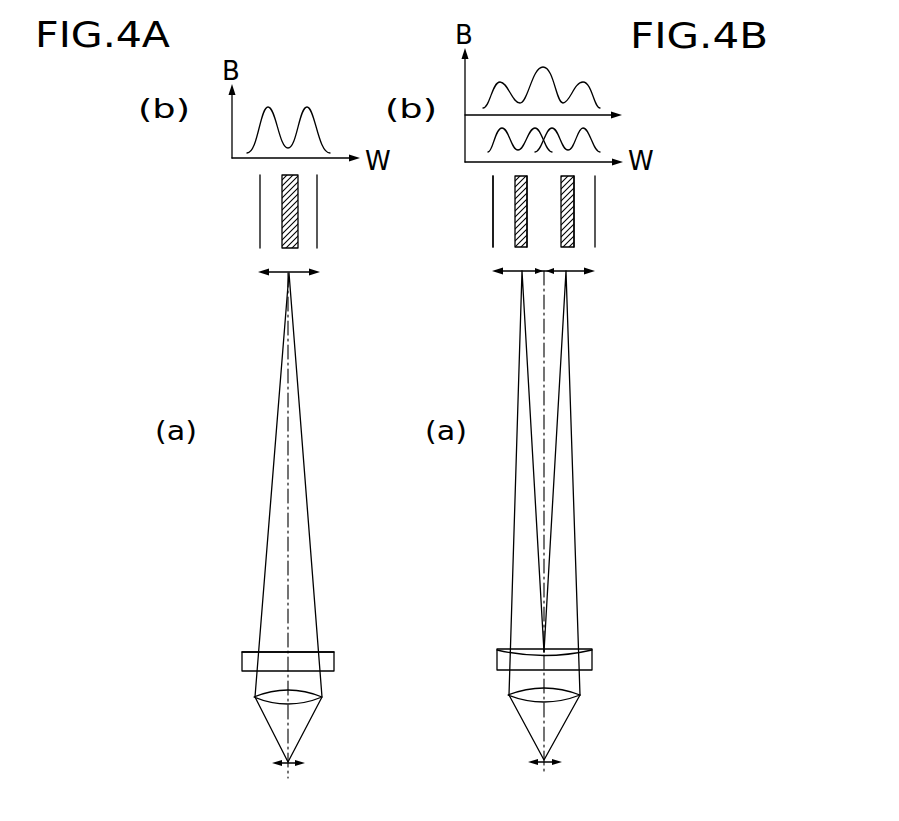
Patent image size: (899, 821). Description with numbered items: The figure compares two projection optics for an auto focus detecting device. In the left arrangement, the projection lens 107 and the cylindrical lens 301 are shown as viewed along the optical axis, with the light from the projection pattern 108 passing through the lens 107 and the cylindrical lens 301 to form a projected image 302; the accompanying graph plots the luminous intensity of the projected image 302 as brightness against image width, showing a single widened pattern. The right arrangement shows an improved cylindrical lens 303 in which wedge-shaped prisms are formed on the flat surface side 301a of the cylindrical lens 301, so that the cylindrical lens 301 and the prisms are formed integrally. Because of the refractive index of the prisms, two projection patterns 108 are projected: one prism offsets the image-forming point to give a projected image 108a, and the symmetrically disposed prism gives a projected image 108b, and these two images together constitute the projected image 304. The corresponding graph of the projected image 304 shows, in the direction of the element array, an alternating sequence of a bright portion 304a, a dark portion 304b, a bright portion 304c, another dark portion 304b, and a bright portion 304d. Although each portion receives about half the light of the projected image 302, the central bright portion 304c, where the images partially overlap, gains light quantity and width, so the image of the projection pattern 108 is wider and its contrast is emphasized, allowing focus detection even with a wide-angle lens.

In FIG. 4A, the projection lens 107 is at (258, 697).
In FIG. 4B, the projection lens 107 is at (578, 697).
In FIG. 4A, the projection pattern 108 is at (290, 766).
In FIG. 4B, the projection pattern 108 is at (556, 766).
In FIG. 4B, the projected image 108a is at (514, 276).
In FIG. 4B, the projected image 108b is at (577, 277).
In FIG. 4A, the cylindrical lens 301 is at (242, 660).
In FIG. 4A, the flat surface side 301a is at (330, 652).
In FIG. 4A, the projected image 302 is at (317, 203).
In FIG. 4B, the cylindrical lens 303 is at (592, 655).
In FIG. 4B, the projected image 304 is at (596, 228).
In FIG. 4B, the bright portion 304a is at (503, 191).
In FIG. 4B, the dark portion 304b is at (560, 238).
In FIG. 4B, the bright portion 304c is at (550, 190).
In FIG. 4B, the bright portion 304d is at (585, 205).